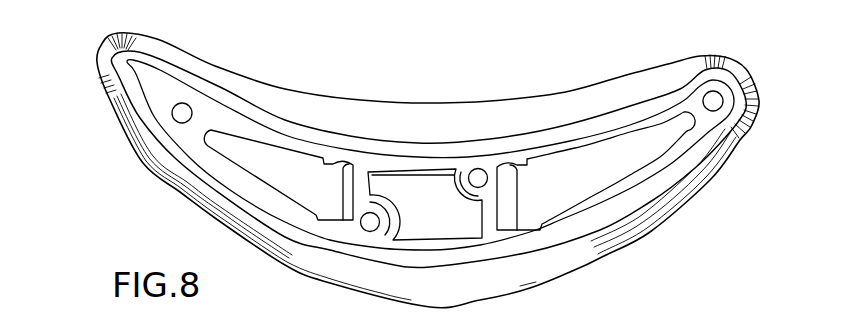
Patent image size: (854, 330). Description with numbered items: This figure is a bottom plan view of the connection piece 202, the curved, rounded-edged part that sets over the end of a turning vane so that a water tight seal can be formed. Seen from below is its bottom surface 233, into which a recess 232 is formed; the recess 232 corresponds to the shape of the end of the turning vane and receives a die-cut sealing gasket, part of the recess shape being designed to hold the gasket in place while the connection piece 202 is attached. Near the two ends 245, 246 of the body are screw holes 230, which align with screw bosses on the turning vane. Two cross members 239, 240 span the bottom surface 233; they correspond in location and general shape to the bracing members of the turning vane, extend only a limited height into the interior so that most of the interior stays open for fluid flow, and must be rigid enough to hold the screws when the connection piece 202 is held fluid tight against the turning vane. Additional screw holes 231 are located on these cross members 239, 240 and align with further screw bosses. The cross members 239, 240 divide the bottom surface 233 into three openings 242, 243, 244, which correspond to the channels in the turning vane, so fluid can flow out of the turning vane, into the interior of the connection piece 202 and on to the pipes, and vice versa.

The connection piece 202 is at (664, 260).
The screw holes 230 is at (172, 115).
The screw holes 231 is at (478, 168).
The recess 232 is at (365, 165).
The bottom surface 233 is at (611, 92).
The cross member 239 is at (514, 197).
The cross member 240 is at (336, 198).
The opening 242 is at (307, 191).
The opening 243 is at (440, 213).
The opening 244 is at (587, 189).
The end 245 is at (733, 74).
The end 246 is at (99, 55).